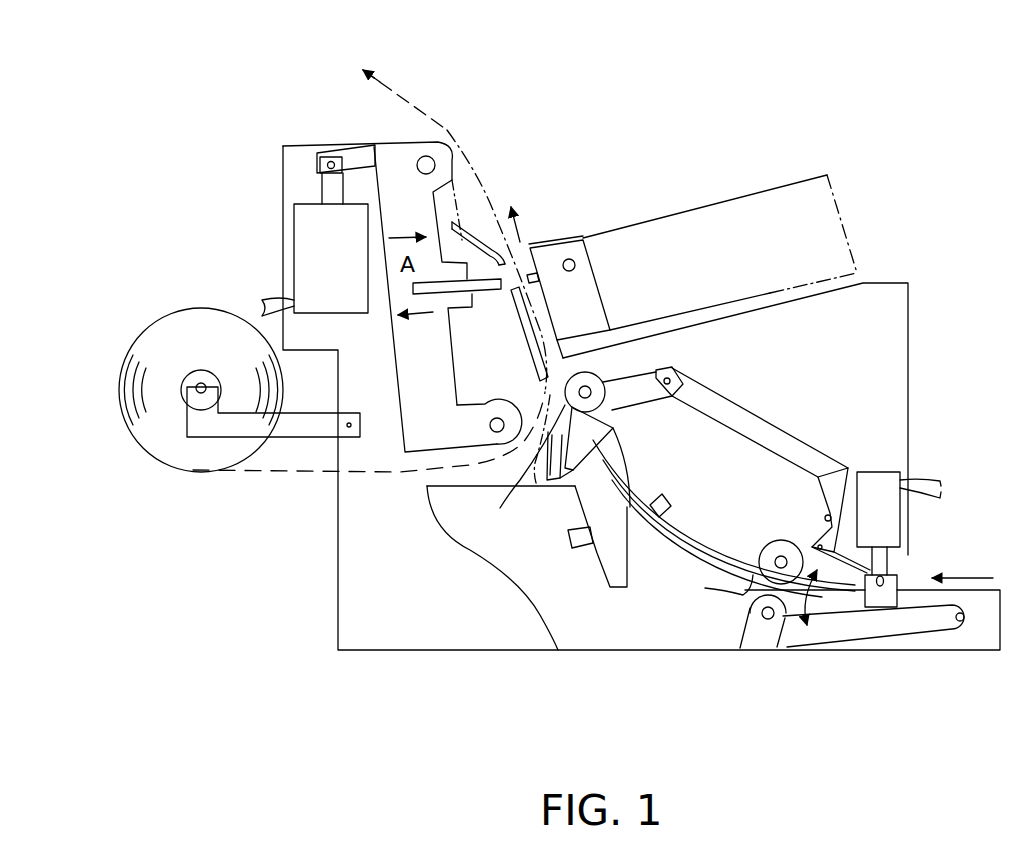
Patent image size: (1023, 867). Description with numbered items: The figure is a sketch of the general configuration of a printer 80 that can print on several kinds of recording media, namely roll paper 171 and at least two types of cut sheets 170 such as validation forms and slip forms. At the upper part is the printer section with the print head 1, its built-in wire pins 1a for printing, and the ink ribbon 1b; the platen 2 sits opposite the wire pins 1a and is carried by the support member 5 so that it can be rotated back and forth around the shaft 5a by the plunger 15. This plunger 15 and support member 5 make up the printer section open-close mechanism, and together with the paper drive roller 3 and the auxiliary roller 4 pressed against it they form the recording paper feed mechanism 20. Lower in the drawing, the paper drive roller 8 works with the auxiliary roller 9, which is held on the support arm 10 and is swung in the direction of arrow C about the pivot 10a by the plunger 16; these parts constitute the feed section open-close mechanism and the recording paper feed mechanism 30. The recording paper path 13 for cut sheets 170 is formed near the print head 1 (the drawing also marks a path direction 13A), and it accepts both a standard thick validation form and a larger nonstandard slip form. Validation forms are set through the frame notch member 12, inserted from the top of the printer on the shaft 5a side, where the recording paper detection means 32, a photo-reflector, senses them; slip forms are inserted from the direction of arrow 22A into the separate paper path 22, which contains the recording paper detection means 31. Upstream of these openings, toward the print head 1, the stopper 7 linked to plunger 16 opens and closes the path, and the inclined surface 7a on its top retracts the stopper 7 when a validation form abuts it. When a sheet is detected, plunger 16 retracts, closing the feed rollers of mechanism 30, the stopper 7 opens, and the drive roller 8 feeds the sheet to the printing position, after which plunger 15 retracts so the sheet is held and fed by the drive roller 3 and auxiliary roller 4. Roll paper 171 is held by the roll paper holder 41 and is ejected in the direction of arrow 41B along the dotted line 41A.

The print head 1 is at (470, 240).
The wire pins 1a is at (548, 294).
The ink ribbon 1b is at (703, 217).
The platen 2 is at (488, 290).
The paper drive roller 3 is at (602, 367).
The auxiliary roller 4 is at (490, 425).
The support member 5 is at (395, 450).
The shaft 5a is at (430, 156).
The stopper 7 is at (614, 430).
The inclined surface 7a is at (543, 465).
The paper drive roller 8 is at (781, 555).
The auxiliary roller 9 is at (752, 627).
The support arm 10 is at (870, 633).
The pivot 10a is at (960, 622).
The frame notch member 12 is at (607, 563).
The recording paper path 13 is at (547, 338).
The sheet conveying direction 13A is at (517, 225).
The plunger 15 is at (310, 233).
The plunger 16 is at (900, 514).
The recording paper feed mechanism 20 is at (482, 443).
The paper path 22 is at (695, 548).
The arrow 22A is at (966, 565).
The recording paper feed mechanism 30 is at (720, 596).
The recording paper detection means 31 is at (670, 503).
The recording paper detection means 32 is at (568, 540).
The roll paper holder 41 is at (190, 425).
The dotted line 41A is at (395, 471).
The arrow 41B is at (367, 65).
The printer 80 is at (300, 600).
The cut sheets 170 is at (690, 550).
The roll paper 171 is at (196, 465).
The arrow C is at (784, 643).